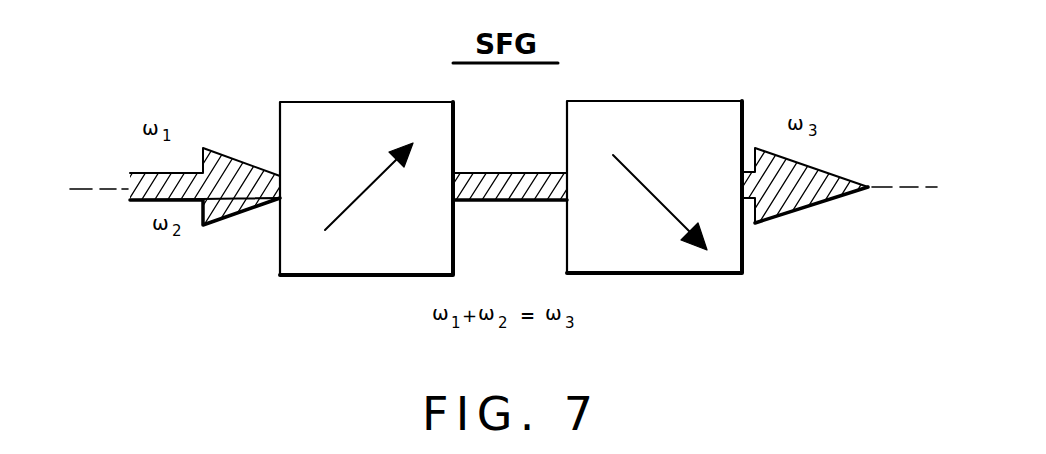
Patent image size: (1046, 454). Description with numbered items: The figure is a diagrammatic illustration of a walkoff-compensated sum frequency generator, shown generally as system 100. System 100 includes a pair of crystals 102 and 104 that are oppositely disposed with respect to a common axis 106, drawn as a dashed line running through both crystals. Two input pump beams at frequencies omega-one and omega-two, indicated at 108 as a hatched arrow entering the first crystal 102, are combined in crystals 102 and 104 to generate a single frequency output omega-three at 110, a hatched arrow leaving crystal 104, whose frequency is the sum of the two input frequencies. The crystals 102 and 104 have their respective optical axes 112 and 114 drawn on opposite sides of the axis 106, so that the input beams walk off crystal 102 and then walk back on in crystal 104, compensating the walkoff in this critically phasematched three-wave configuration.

The walkoff-compensated sum frequency generator system 100 is at (710, 40).
The first crystal 102 is at (330, 110).
The second crystal 104 is at (603, 110).
The common axis 106 is at (103, 190).
The input pump beams 108 is at (240, 213).
The single frequency output 110 is at (798, 212).
The optical axis of first crystal 112 is at (367, 192).
The optical axis of second crystal 114 is at (652, 190).